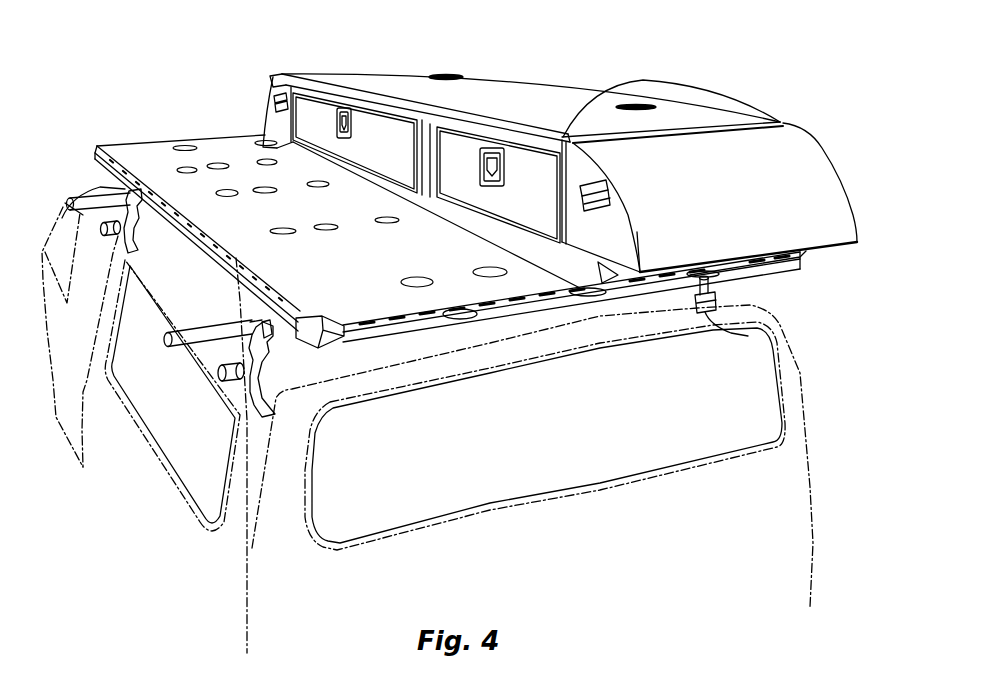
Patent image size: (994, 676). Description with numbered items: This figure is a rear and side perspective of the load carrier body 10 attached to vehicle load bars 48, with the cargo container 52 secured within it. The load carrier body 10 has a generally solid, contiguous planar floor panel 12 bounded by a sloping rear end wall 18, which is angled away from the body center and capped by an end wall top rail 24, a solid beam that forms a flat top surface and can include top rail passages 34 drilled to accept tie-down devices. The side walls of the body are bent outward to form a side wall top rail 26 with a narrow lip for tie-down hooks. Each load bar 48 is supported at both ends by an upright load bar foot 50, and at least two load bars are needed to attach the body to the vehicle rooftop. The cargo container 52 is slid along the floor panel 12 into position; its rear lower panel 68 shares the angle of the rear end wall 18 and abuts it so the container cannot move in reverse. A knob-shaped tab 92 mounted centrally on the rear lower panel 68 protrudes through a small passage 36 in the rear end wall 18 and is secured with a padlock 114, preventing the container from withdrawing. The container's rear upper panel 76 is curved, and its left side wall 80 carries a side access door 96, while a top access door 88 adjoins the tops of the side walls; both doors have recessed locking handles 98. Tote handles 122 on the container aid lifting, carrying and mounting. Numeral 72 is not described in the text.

The load carrier body 10 is at (213, 135).
The floor panel 12 is at (374, 250).
The rear end wall 18 is at (364, 330).
The end wall top rail 24 is at (260, 320).
The side wall top rail 26 is at (205, 224).
The top rail passages 34 is at (382, 308).
The small passage 36 is at (463, 318).
The load bar 48 is at (84, 200).
The load bar foot 50 is at (144, 226).
The cargo container 52 is at (520, 158).
The rear lower panel 68 is at (603, 268).
The side panel edge 72 is at (640, 270).
The rear upper panel 76 is at (742, 210).
The left side wall 80 is at (333, 165).
The top access door 88 is at (480, 100).
The rear lower panel tab 92 is at (733, 276).
The side access door 96 is at (310, 131).
The locking handle 98 is at (443, 76).
The padlock 114 is at (744, 337).
The tote handle 122 is at (612, 198).